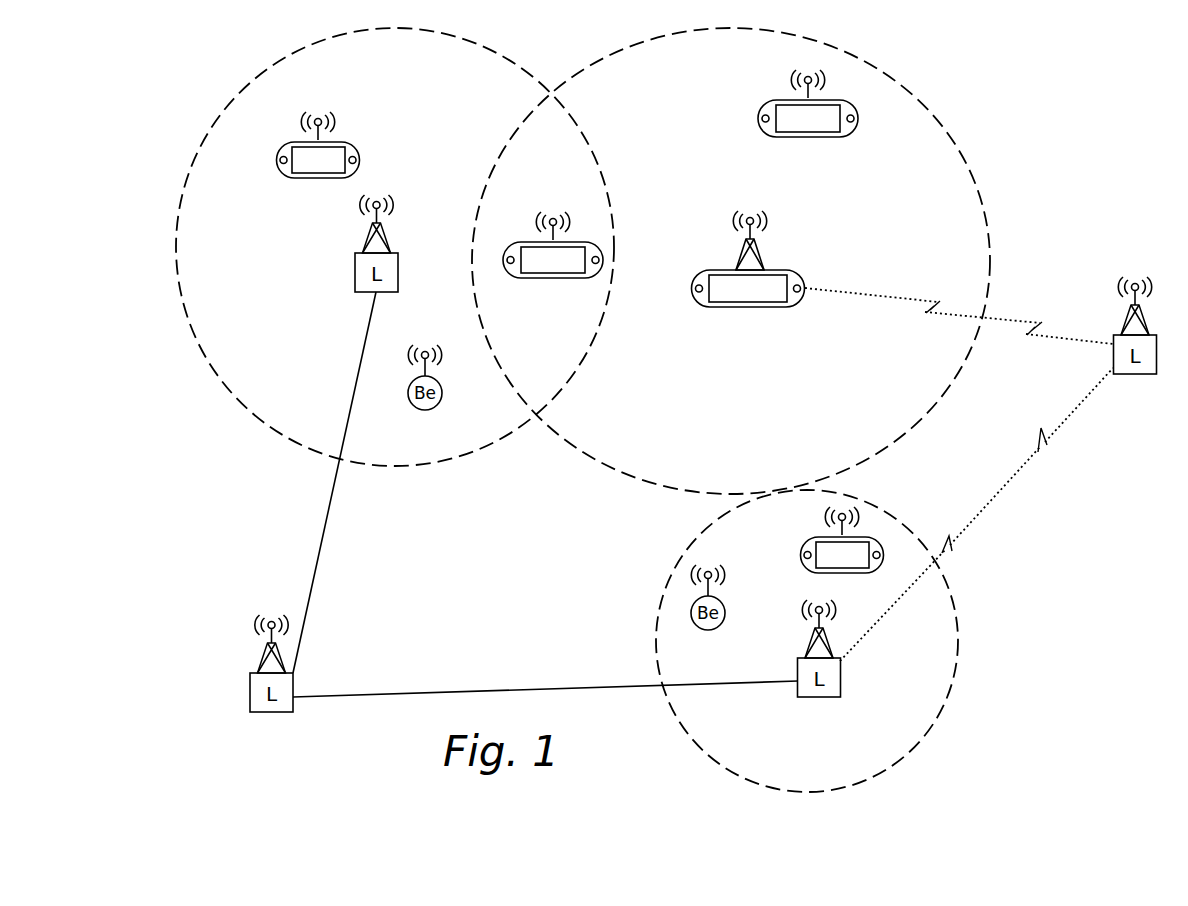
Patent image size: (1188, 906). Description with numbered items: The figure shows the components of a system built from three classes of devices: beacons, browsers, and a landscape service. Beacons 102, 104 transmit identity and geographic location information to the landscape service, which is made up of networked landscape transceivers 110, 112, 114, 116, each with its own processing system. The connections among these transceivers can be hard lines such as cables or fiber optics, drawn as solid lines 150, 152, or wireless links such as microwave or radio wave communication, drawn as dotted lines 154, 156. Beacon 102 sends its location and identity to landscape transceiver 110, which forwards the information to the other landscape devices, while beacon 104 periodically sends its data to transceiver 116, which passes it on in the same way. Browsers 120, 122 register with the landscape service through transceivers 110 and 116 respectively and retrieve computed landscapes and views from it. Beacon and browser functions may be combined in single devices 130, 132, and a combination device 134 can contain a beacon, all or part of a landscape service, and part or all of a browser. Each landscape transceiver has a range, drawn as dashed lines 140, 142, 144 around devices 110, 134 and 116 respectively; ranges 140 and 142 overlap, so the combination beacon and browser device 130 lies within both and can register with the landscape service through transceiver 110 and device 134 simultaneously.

The beacon 102 is at (442, 393).
The beacon 104 is at (748, 623).
The landscape transceiver 110 is at (355, 271).
The landscape transceiver 112 is at (1145, 375).
The landscape transceiver 114 is at (293, 684).
The landscape transceiver 116 is at (837, 697).
The browser 120 is at (386, 153).
The browser 122 is at (800, 557).
The combination beacon and browser device 130 is at (563, 278).
The combination beacon and browser device 132 is at (808, 137).
The combination device 134 is at (794, 272).
The range 140 is at (285, 433).
The range 142 is at (987, 232).
The range 144 is at (933, 718).
The solid line 150 is at (331, 508).
The solid line 152 is at (505, 689).
The dotted line 154 is at (1045, 336).
The dotted line 156 is at (970, 524).